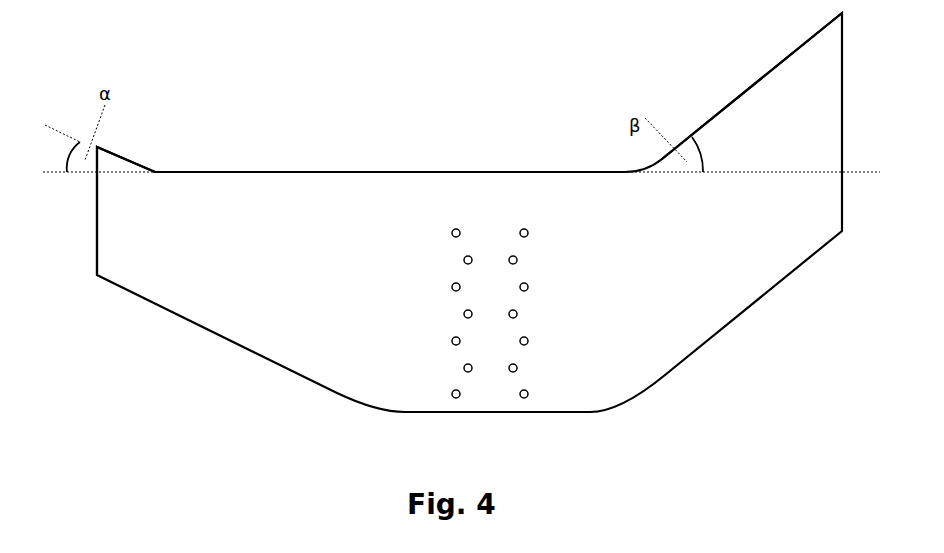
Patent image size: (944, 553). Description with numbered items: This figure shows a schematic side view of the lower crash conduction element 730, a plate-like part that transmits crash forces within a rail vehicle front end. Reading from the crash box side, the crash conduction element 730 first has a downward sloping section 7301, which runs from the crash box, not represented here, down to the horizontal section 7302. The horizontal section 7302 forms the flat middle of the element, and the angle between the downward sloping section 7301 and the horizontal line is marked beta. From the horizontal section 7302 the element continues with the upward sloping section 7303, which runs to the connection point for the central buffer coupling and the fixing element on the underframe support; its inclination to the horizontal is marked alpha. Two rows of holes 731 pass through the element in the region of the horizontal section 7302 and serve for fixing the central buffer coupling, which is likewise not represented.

The lower crash conduction element 730 is at (327, 138).
The downward sloping section of the crash conduction element 7301 is at (752, 163).
The horizontal section 7302 is at (387, 205).
The upward sloping section of the crash conduction element 7303 is at (112, 232).
The holes for fixing the central buffer coupling 731 is at (460, 228).